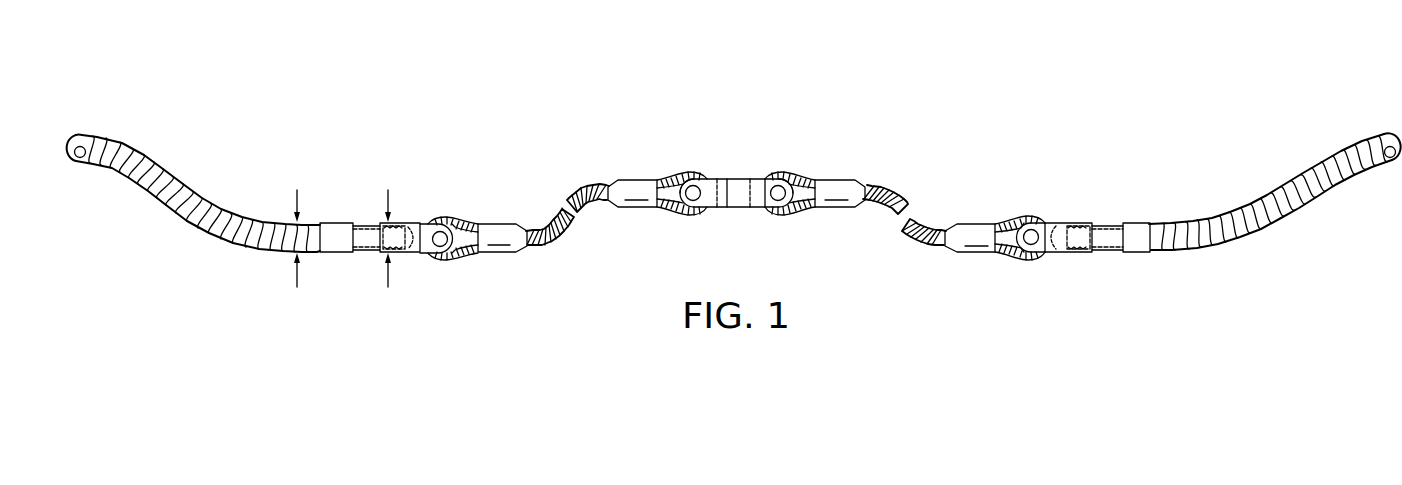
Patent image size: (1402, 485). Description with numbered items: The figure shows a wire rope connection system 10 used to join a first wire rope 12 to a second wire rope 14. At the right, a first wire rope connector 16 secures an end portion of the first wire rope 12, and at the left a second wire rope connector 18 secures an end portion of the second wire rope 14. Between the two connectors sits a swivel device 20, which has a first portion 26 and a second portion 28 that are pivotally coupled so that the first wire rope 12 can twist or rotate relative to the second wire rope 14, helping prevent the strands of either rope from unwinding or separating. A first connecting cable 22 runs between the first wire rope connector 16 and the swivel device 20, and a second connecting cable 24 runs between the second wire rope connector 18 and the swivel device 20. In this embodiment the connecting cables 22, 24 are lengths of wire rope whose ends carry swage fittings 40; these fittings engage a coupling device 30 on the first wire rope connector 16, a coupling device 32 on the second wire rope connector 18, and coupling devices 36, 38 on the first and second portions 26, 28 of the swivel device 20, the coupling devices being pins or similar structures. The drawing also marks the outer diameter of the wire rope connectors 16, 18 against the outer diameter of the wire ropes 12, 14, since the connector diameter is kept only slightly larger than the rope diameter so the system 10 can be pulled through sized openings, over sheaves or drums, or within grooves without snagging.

The wire rope connection system 10 is at (1030, 82).
The first wire rope 12 is at (1287, 220).
The second wire rope 14 is at (188, 226).
The first wire rope connector 16 is at (1084, 239).
The second wire rope connector 18 is at (399, 240).
The swivel device 20 is at (736, 184).
The first connecting cable 22 is at (887, 188).
The second connecting cable 24 is at (587, 185).
The first portion 26 is at (764, 179).
The second portion 28 is at (707, 179).
The coupling device 30 is at (1038, 246).
The coupling device 32 is at (445, 247).
The coupling device 36 is at (769, 201).
The coupling device 38 is at (703, 201).
The swage fittings 40 is at (497, 253).